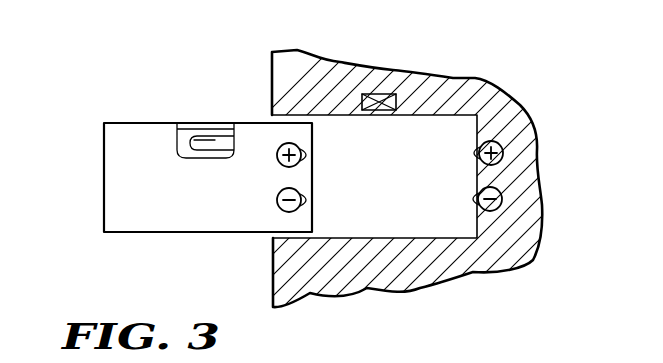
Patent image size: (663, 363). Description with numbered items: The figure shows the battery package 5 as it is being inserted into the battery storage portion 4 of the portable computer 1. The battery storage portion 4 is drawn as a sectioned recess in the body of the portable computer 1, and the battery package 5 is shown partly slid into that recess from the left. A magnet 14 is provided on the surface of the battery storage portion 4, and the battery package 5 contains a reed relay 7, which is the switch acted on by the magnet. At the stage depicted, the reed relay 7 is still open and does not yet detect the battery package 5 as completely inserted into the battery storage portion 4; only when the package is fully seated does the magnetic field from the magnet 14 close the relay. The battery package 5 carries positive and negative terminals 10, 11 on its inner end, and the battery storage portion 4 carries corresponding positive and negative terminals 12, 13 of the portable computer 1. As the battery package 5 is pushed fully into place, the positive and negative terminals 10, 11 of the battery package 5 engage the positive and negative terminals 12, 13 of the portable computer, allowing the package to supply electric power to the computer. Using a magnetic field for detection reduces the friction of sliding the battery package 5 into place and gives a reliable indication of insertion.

The portable computer 1 is at (551, 171).
The battery storage section 4 is at (398, 228).
The battery package 5 is at (104, 176).
The reed relay 7 is at (207, 122).
The positive terminal 10 is at (318, 150).
The negative terminal 11 is at (318, 196).
The positive terminal 12 is at (472, 150).
The negative terminal 13 is at (470, 197).
The magnet 14 is at (381, 94).